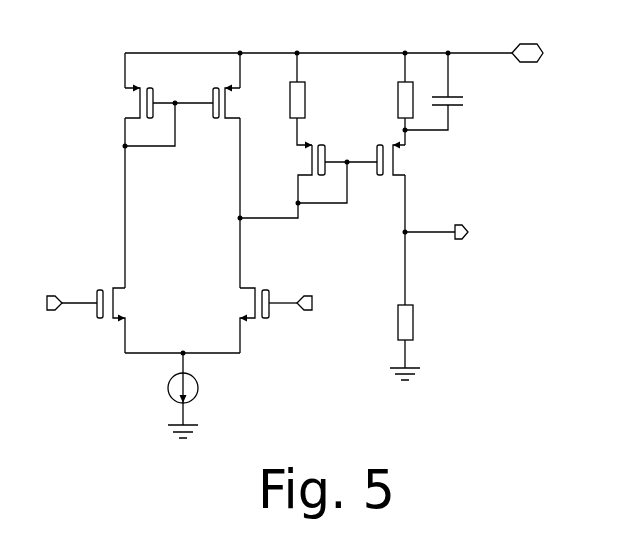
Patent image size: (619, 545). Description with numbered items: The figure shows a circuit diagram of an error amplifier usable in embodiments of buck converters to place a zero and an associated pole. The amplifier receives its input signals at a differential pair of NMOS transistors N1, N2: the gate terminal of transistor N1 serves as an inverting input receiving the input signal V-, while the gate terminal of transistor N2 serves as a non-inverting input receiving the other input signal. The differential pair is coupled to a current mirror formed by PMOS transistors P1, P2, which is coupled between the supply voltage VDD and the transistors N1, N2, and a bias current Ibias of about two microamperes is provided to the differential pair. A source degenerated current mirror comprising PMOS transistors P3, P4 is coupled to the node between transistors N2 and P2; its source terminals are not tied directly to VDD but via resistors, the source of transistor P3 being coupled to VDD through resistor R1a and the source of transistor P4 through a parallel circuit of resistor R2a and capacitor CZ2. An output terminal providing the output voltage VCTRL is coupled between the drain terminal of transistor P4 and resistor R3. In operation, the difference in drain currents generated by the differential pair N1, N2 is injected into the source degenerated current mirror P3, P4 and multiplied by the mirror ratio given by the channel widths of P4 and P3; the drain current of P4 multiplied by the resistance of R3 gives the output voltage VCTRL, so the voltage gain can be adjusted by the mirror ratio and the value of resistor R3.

The PMOS transistor P1 is at (155, 116).
The PMOS transistor P2 is at (238, 102).
The PMOS transistor P3 is at (308, 181).
The PMOS transistor P4 is at (403, 159).
The NMOS transistor N1 is at (93, 320).
The NMOS transistor N2 is at (268, 320).
The resistor R1a is at (311, 101).
The resistor R2a is at (389, 99).
The resistor R3 is at (415, 342).
The capacitor CZ2 is at (449, 91).
The bias current Ibias is at (188, 395).
The internal supply voltage VDD is at (532, 40).
The output voltage VCTRL is at (455, 229).
The input signal V- is at (43, 311).